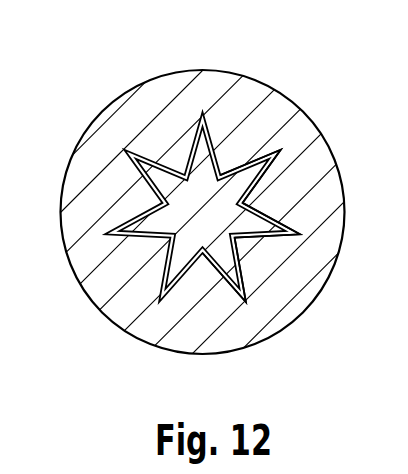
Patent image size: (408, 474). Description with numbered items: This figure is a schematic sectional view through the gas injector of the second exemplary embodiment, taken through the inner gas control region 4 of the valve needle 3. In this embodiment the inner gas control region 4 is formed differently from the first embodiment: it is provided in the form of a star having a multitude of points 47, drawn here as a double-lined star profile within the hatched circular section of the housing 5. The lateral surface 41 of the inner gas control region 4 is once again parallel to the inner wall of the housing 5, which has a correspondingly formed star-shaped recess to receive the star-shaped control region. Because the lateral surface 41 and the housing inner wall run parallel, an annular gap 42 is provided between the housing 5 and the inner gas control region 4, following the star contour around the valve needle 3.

The valve needle 3 is at (178, 187).
The inner gas control region 4 is at (182, 100).
The housing 5 is at (70, 205).
The cylindrical lateral surface 41 is at (192, 149).
The annular gap 42 is at (212, 134).
The points 47 is at (252, 176).